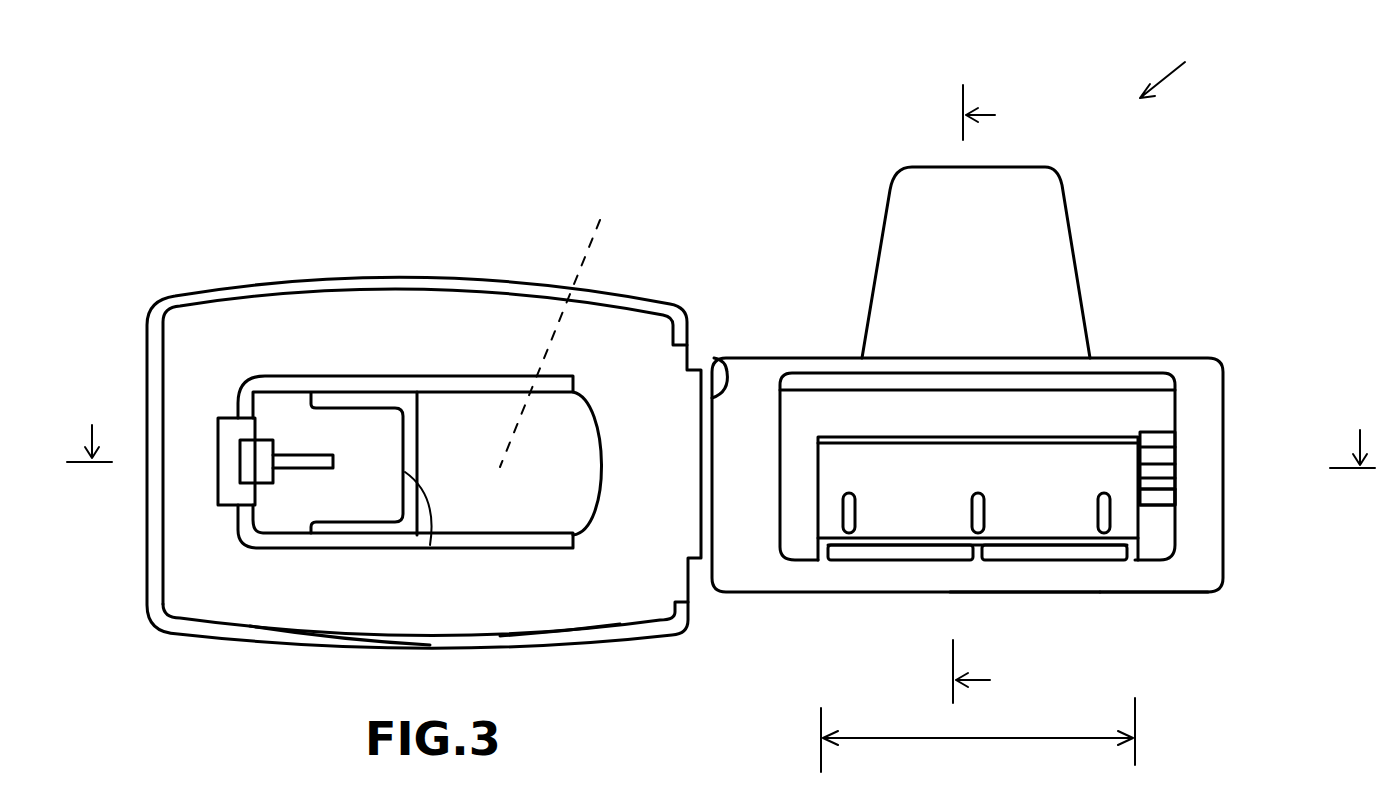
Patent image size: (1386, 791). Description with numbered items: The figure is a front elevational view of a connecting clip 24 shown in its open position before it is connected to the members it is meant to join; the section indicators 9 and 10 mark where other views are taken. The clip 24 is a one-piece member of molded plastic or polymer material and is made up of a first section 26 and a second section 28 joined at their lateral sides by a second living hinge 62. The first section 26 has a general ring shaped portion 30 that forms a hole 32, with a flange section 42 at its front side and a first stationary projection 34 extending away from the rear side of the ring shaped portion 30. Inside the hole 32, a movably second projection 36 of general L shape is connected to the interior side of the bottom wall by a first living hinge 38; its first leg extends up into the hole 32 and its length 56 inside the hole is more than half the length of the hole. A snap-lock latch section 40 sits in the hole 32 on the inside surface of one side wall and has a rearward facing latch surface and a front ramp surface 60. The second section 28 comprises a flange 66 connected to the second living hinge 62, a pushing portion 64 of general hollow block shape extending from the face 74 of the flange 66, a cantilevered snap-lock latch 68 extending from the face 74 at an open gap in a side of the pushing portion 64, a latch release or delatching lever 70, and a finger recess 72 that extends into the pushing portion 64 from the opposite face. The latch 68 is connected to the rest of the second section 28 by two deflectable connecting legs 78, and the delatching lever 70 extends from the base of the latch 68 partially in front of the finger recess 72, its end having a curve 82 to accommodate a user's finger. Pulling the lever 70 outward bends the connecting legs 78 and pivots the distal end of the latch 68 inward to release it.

The section line 9 is at (721, 468).
The section line 10 is at (950, 394).
The connecting clip 24 is at (1179, 68).
The first section 26 is at (1217, 361).
The second section 28 is at (185, 293).
The general ring shaped portion 30 is at (1217, 562).
The hole 32 is at (1160, 410).
The first stationary projection 34 is at (1068, 220).
The movably second projection 36 is at (1113, 475).
The first living hinge 38 is at (1003, 553).
The snap-lock latch section 40 is at (1160, 457).
The flange section 42 is at (1162, 595).
The length 56 is at (935, 743).
The front ramp surface 60 is at (1163, 483).
The second living hinge 62 is at (709, 396).
The pushing portion 64 is at (474, 430).
The flange 66 is at (273, 618).
The cantilevered snap-lock latch 68 is at (247, 457).
The delatching lever 70 is at (368, 433).
The finger recess 72 is at (561, 329).
The face 74 is at (542, 601).
The deflectable connecting legs 78 is at (283, 417).
The curve 82 is at (430, 545).